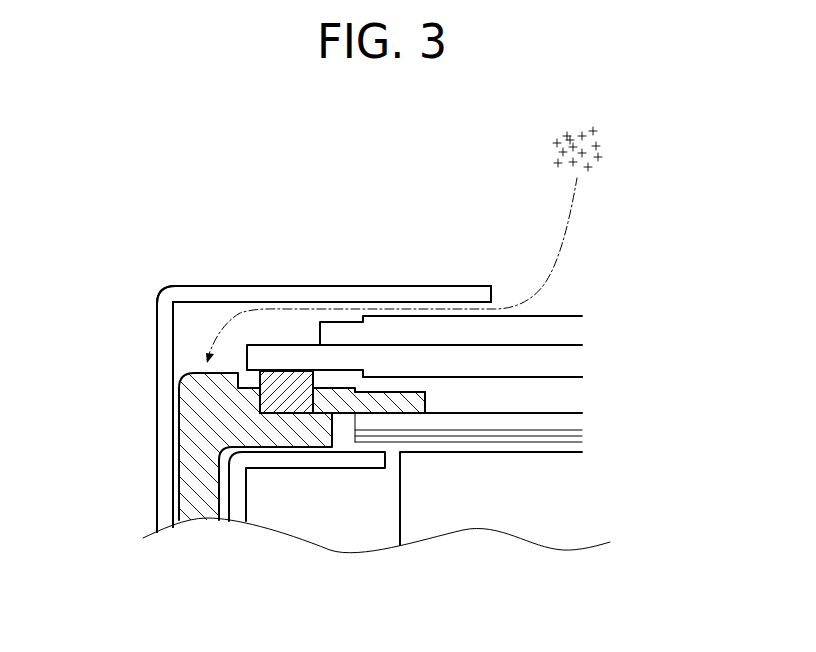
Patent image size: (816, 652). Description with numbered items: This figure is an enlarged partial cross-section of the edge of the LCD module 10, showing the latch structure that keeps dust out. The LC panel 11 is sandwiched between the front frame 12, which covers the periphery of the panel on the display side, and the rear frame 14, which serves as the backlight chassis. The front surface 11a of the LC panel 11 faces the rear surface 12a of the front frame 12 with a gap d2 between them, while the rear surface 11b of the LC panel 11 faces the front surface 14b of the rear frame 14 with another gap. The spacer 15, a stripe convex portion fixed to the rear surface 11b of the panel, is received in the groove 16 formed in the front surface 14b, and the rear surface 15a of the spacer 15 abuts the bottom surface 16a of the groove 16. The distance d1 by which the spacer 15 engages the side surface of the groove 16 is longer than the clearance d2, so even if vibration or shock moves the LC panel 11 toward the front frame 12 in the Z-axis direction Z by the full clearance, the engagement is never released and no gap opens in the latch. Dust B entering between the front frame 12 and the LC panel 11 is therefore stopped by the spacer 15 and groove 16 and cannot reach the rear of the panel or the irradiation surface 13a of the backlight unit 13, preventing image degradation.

The LCD module 10 is at (399, 191).
The LC panel 11 is at (587, 345).
The front surface of the LC panel 11a is at (555, 316).
The rear surface of the LC panel 11b is at (537, 378).
The front frame 12 is at (162, 289).
The rear surface of the front frame 12a is at (413, 300).
The backlight unit 13 is at (560, 517).
The irradiation surface 13a is at (498, 413).
The rear frame 14 is at (207, 517).
The front surface of the rear frame 14b is at (408, 396).
The spacer 15 is at (283, 370).
The rear surface of the spacer 15a is at (304, 405).
The groove 16 is at (258, 399).
The bottom surface of the groove 16a is at (277, 417).
The dust B is at (600, 134).
The engagement distance d1 is at (260, 415).
The gap d2 is at (523, 317).
The Z-axis direction Z is at (695, 560).